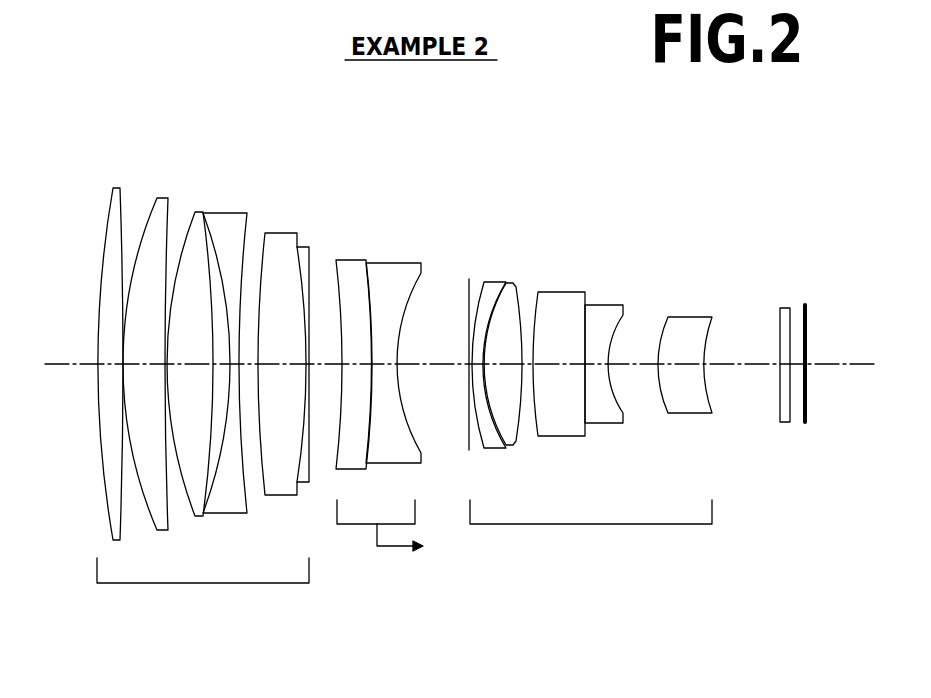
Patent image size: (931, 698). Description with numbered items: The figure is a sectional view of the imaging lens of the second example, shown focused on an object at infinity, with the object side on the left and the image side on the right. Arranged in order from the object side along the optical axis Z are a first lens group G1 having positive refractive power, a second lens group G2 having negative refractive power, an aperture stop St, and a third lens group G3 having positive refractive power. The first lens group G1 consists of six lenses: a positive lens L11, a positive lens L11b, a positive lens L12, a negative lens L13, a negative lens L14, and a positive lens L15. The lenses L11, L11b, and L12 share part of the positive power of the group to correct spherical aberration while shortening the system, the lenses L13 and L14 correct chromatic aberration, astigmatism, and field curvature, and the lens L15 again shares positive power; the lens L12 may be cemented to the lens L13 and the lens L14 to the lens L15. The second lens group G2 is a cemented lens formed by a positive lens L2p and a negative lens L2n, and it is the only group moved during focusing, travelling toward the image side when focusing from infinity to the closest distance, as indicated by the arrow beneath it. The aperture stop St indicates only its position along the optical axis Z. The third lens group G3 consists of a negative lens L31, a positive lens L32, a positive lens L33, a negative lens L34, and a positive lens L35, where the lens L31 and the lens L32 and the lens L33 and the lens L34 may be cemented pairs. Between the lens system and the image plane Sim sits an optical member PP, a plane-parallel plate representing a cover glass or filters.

The optical axis Z is at (62, 362).
The first lens group G1 is at (186, 352).
The positive lens L11 is at (117, 188).
The positive lens L11b is at (163, 197).
The positive lens L12 is at (202, 212).
The negative lens L13 is at (223, 222).
The negative lens L14 is at (280, 238).
The positive lens L15 is at (307, 250).
The second lens group G2 is at (394, 351).
The positive lens L2p is at (353, 262).
The negative lens L2n is at (392, 273).
The aperture stop St is at (468, 280).
The third lens group G3 is at (581, 350).
The negative lens L31 is at (495, 282).
The positive lens L32 is at (513, 283).
The positive lens L33 is at (562, 297).
The negative lens L34 is at (600, 310).
The positive lens L35 is at (690, 318).
The optical member PP is at (786, 308).
The image plane Sim is at (805, 420).